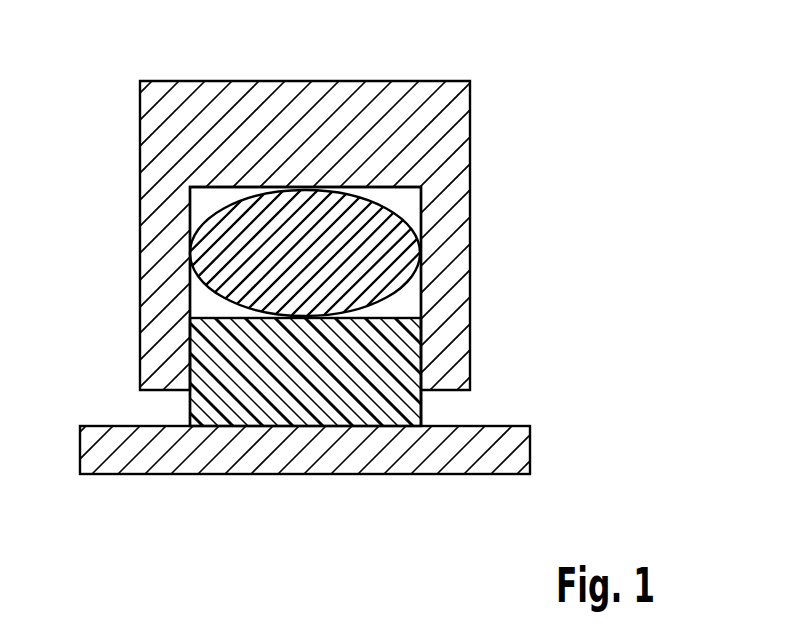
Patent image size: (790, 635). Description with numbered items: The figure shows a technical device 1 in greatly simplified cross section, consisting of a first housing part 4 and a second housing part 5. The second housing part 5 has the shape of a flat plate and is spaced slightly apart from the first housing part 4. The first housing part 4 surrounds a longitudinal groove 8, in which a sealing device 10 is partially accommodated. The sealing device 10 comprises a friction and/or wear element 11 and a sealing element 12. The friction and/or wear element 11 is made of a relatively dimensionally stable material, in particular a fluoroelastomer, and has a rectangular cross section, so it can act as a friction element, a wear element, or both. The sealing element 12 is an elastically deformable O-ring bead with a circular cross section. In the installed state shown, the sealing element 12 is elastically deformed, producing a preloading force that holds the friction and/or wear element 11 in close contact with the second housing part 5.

The technical device 1 is at (383, 280).
The first housing part 4 is at (304, 105).
The second housing part 5 is at (304, 450).
The longitudinal groove 8 is at (422, 205).
The sealing device 10 is at (436, 407).
The friction and/or wear element 11 is at (226, 407).
The sealing element 12 is at (226, 257).